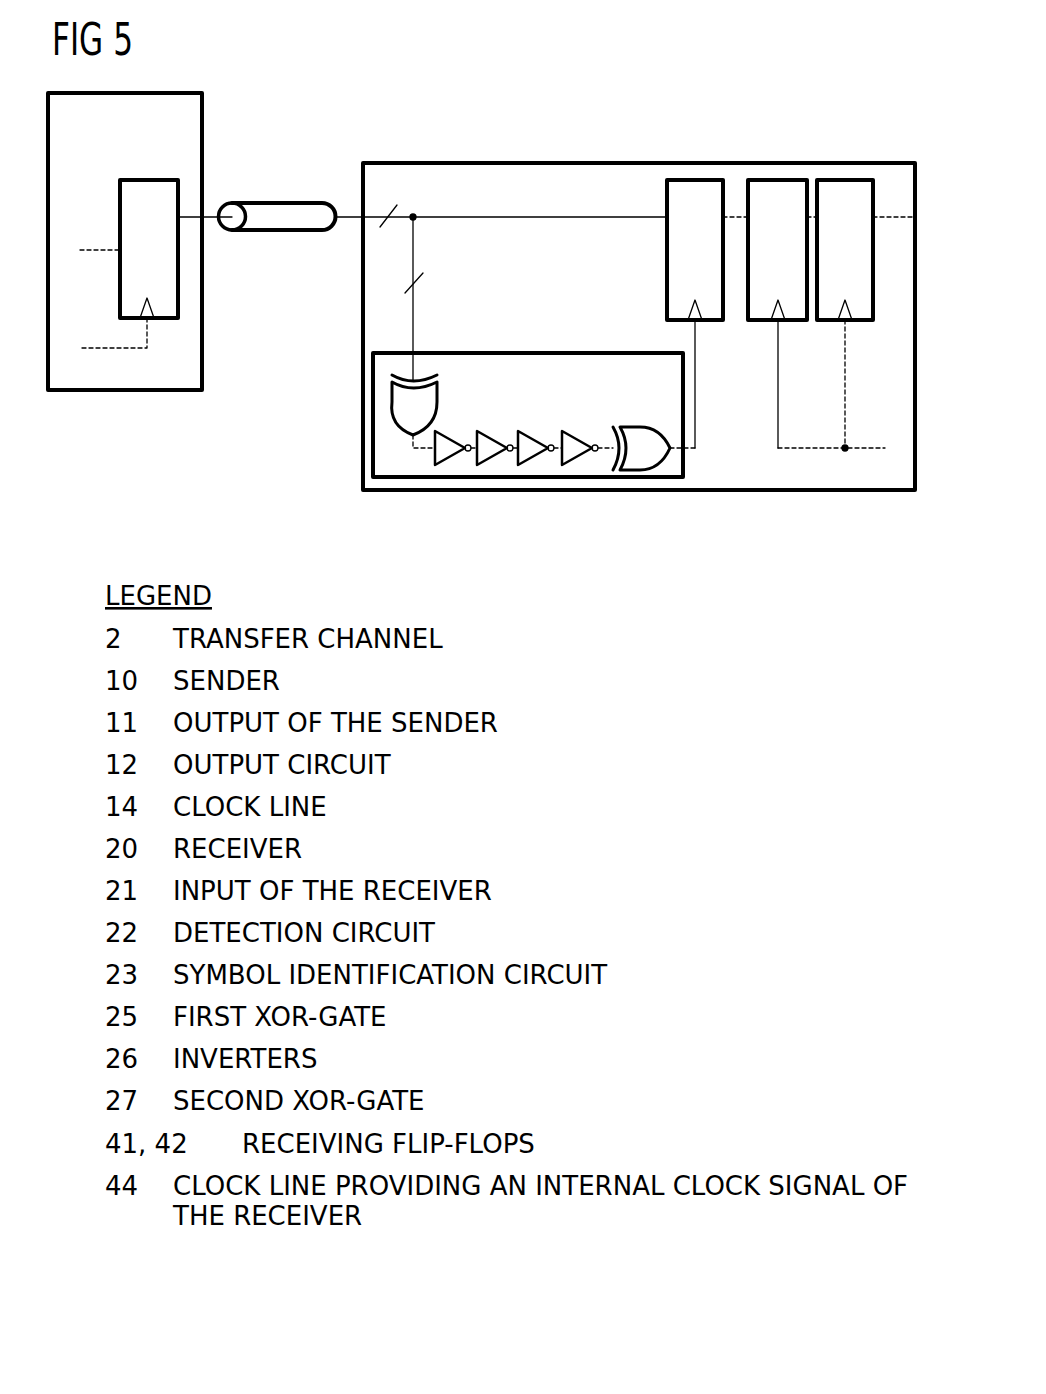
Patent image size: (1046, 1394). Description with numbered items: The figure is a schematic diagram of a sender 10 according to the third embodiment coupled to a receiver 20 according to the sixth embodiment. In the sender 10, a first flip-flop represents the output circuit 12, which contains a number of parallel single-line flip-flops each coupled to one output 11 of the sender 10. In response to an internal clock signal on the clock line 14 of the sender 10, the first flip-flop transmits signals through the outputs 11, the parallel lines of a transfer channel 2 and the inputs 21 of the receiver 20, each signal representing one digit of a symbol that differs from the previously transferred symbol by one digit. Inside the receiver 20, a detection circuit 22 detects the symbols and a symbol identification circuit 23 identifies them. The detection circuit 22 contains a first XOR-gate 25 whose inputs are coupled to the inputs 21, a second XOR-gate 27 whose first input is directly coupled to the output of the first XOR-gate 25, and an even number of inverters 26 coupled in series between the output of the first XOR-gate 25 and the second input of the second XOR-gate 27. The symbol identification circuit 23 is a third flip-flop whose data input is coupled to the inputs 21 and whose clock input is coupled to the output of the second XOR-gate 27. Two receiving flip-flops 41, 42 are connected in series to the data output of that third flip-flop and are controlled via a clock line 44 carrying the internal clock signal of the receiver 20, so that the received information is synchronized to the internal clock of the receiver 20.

The transfer channel 2 is at (275, 236).
The sender 10 is at (173, 390).
The output of the sender 11 is at (203, 207).
The output circuit 12 is at (132, 178).
The clock line 14 is at (123, 350).
The receiver 20 is at (745, 492).
The input of the receiver 21 is at (357, 208).
The detection circuit 22 is at (547, 352).
The symbol identification circuit 23 is at (700, 323).
The first XOR-gate 25 is at (437, 403).
The inverters 26 is at (528, 457).
The second XOR-gate 27 is at (648, 472).
The receiving flip-flop 41 is at (783, 323).
The receiving flip-flop 42 is at (848, 322).
The clock line providing an internal clock signal of the receiver 44 is at (827, 447).